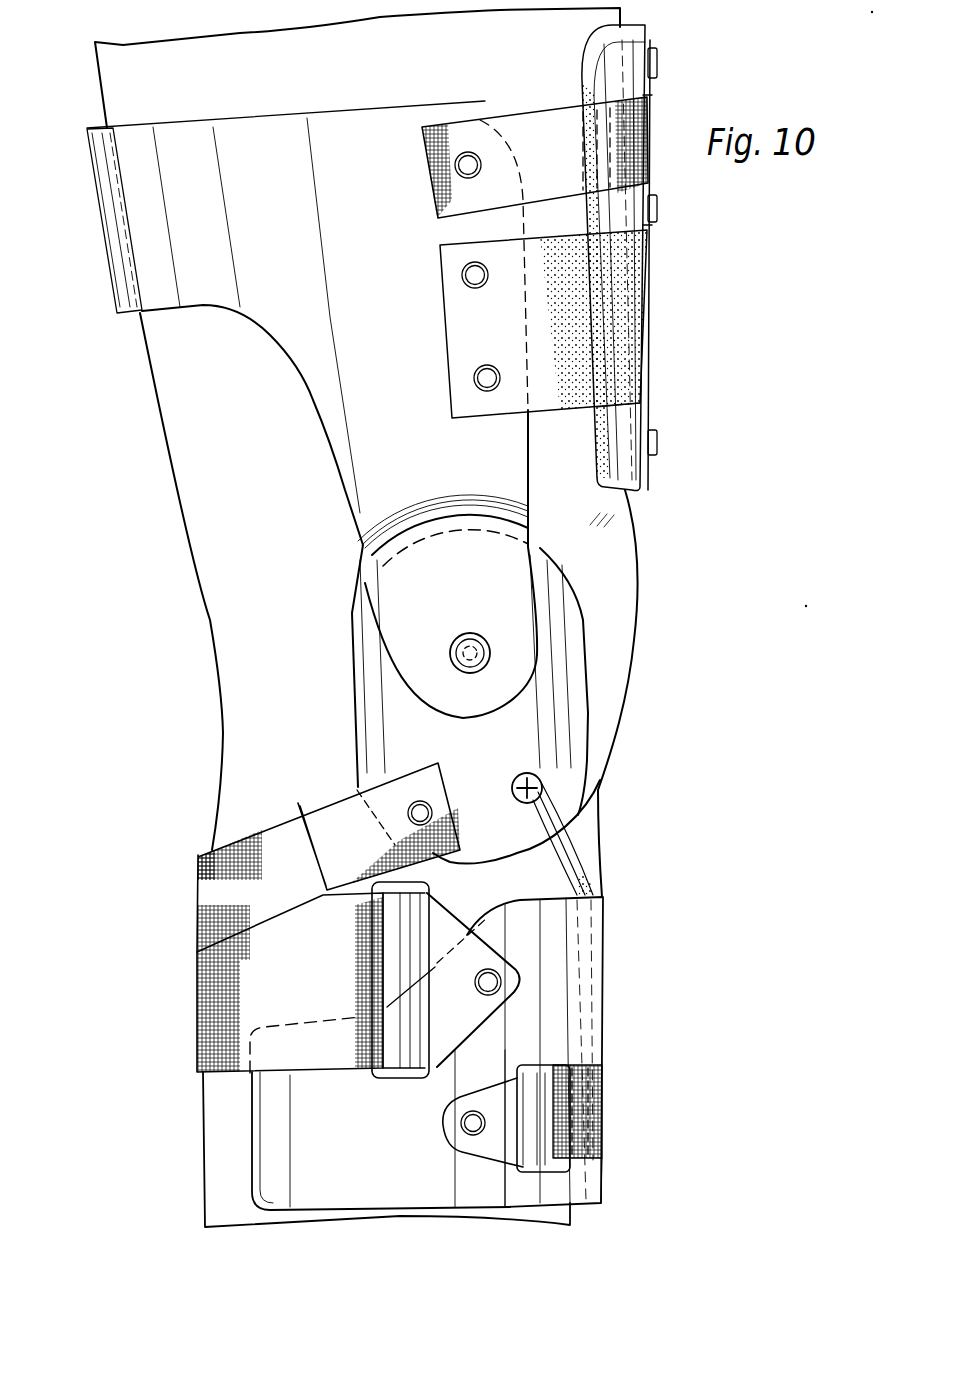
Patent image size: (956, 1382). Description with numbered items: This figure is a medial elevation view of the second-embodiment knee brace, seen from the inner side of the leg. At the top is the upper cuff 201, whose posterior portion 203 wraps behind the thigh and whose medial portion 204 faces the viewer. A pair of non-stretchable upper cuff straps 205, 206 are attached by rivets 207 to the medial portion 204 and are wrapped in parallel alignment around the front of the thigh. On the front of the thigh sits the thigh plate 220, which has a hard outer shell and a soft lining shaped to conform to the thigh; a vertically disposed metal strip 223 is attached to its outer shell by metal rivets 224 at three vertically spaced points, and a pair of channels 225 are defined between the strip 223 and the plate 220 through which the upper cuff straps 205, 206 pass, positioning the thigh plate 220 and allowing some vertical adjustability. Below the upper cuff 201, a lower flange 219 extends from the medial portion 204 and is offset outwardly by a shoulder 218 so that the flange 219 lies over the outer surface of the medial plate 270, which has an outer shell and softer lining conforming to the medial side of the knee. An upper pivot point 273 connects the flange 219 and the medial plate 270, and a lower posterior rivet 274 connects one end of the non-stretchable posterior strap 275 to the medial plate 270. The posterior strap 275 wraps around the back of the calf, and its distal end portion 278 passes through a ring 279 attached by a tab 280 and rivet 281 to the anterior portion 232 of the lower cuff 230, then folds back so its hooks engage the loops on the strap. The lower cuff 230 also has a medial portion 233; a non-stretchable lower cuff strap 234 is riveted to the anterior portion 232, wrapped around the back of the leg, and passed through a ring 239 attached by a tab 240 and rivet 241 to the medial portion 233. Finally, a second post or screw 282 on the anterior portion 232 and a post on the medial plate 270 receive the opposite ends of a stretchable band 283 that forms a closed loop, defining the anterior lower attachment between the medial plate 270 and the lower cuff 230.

The upper cuff 201 is at (660, 33).
The posterior portion 203 is at (138, 315).
The medial portion 204 is at (318, 408).
The upper cuff strap 205 is at (563, 110).
The upper cuff strap 206 is at (567, 242).
The rivets 207 is at (470, 152).
The shoulder 218 is at (523, 517).
The lower flange 219 is at (528, 598).
The thigh plate 220 is at (658, 432).
The metal strip 223 is at (655, 128).
The metal rivets 224 is at (658, 65).
The channels 225 is at (652, 95).
The lower cuff 230 is at (614, 1016).
The anterior portion 232 is at (598, 1178).
The medial portion 233 is at (343, 1178).
The lower cuff strap 234 is at (205, 1018).
The ring 239 is at (395, 1082).
The tab 240 is at (500, 957).
The rivet 241 is at (495, 982).
The medial plate 270 is at (582, 705).
The upper pivot point 273 is at (490, 653).
The lower posterior rivet 274 is at (430, 808).
The posterior strap 275 is at (323, 800).
The distal end portion 278 is at (605, 1095).
The ring 279 is at (557, 1060).
The tab 280 is at (205, 862).
The rivet 281 is at (465, 1125).
The post or screw 282 is at (545, 778).
The stretchable band 283 is at (587, 843).